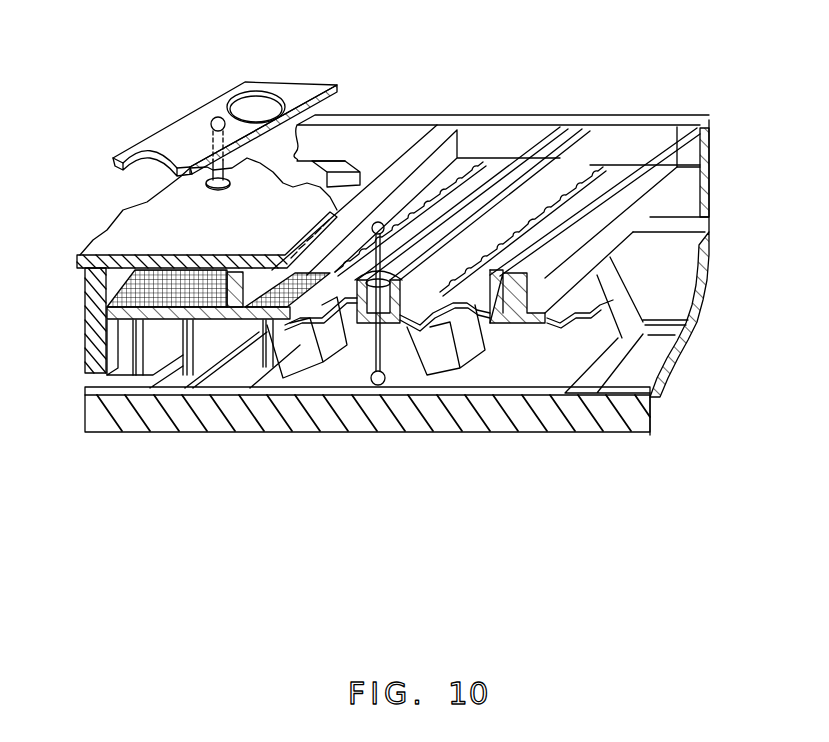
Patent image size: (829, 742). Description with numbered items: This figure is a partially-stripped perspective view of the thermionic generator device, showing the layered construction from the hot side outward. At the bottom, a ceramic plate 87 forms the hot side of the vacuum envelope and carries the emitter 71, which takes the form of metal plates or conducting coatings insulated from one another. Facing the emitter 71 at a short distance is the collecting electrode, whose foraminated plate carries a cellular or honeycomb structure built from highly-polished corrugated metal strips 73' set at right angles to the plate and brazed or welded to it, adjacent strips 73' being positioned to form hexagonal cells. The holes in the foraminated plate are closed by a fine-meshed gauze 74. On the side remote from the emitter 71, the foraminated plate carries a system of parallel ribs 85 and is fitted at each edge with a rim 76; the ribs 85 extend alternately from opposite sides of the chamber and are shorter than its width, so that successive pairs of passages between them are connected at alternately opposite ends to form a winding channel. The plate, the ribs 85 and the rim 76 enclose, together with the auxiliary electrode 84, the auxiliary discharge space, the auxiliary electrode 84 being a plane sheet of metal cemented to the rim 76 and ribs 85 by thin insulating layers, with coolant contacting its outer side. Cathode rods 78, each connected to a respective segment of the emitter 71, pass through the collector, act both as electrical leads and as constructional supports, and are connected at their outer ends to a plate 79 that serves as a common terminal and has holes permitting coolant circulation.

The emitter 71 is at (678, 287).
The corrugated metal strips 73' is at (376, 395).
The fine-meshed gauze 74 is at (133, 283).
The rim 76 is at (598, 123).
The cathode rods 78 is at (378, 342).
The plate 79 is at (293, 92).
The auxiliary electrode 84 is at (157, 207).
The ribs 85 is at (658, 135).
The ceramic plate 87 is at (575, 423).